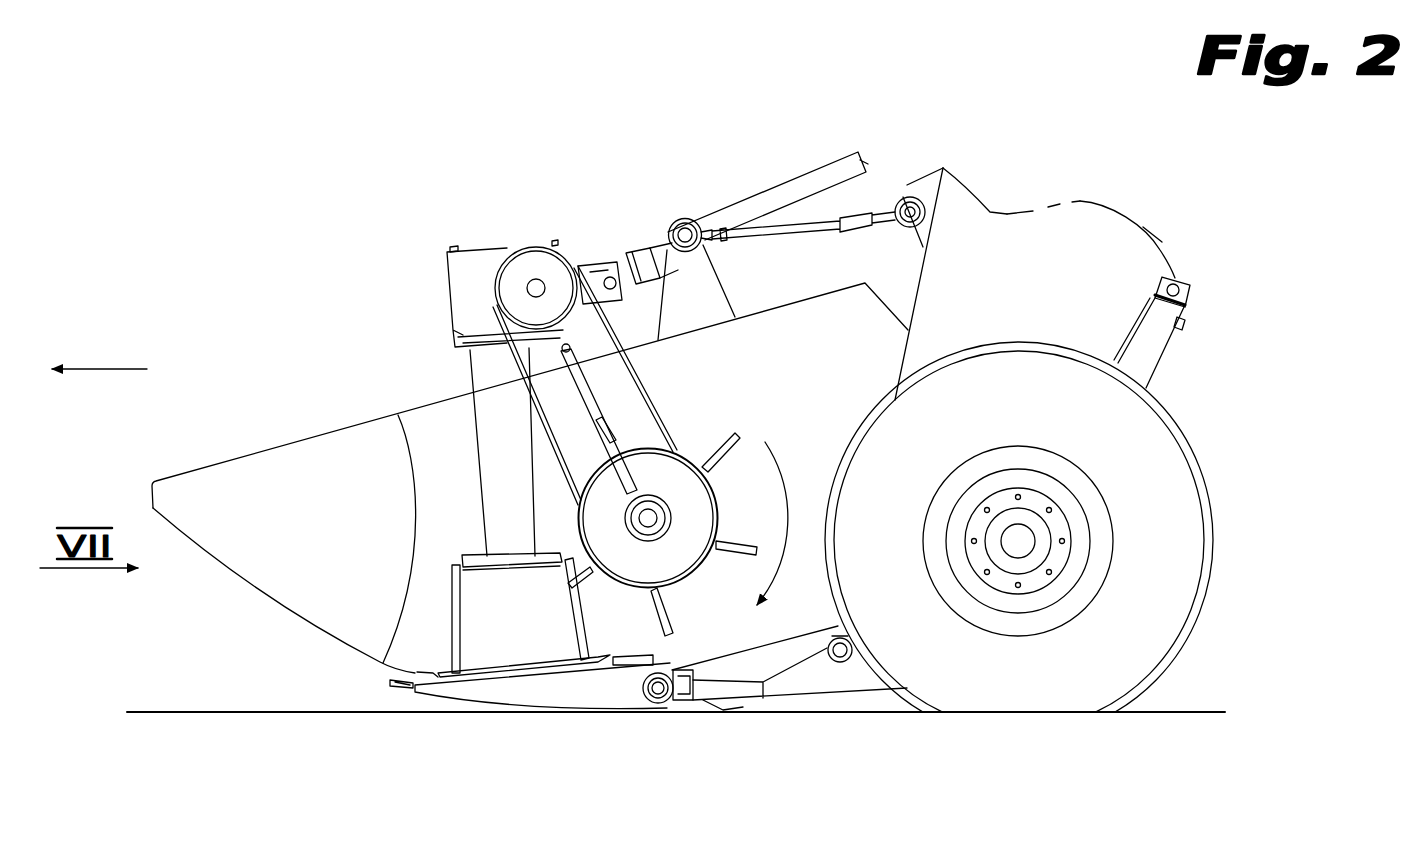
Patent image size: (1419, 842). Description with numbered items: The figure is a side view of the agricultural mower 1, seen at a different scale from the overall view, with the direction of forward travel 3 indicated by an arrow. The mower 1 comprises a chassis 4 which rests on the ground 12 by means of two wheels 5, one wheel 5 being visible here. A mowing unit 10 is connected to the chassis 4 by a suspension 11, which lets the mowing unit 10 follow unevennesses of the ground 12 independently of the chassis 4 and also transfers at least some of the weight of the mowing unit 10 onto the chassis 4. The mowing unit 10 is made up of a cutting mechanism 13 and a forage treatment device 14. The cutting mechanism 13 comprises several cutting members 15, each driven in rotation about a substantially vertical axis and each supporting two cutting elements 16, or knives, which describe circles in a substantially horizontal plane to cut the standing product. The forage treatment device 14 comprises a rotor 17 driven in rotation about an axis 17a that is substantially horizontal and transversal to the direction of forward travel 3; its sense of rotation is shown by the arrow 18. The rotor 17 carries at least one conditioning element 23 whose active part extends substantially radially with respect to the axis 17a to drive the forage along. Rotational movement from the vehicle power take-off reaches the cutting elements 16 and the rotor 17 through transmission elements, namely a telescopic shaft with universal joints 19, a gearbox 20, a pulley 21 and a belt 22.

The mower 1 is at (263, 173).
The direction of forward travel 3 is at (102, 369).
The chassis 4 is at (955, 178).
The wheel 5 is at (1205, 447).
The mowing unit 10 is at (292, 440).
The suspension 11 is at (828, 702).
The ground 12 is at (163, 712).
The cutting mechanism 13 is at (456, 594).
The forage treatment device 14 is at (644, 477).
The cutting member 15 is at (513, 624).
The cutting element 16 is at (390, 683).
The rotor 17 is at (644, 504).
The axis 17a is at (648, 518).
The arrow 18 is at (788, 527).
The telescopic shaft with universal joints 19 is at (822, 165).
The gearbox 20 is at (470, 253).
The pulley 21 is at (496, 290).
The belt 22 is at (660, 400).
The conditioning element 23 is at (745, 432).